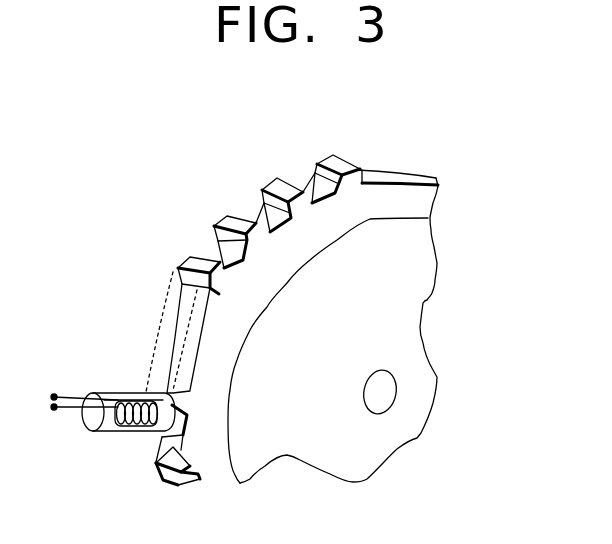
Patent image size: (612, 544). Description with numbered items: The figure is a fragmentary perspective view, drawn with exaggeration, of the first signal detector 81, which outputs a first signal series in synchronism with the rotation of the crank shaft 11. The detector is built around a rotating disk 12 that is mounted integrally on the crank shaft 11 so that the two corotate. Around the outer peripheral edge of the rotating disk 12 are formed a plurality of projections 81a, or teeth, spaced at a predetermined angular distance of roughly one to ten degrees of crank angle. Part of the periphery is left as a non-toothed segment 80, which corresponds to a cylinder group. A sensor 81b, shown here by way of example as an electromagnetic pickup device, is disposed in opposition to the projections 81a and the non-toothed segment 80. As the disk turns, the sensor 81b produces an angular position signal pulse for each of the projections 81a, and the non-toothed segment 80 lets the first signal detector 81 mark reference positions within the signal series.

The non-toothed segment 80 is at (380, 174).
The first signal detector 81 is at (110, 503).
The projections 81a is at (221, 216).
The sensor 81b is at (110, 393).
The rotating disk 12 is at (403, 287).
The crank shaft 11 is at (396, 378).